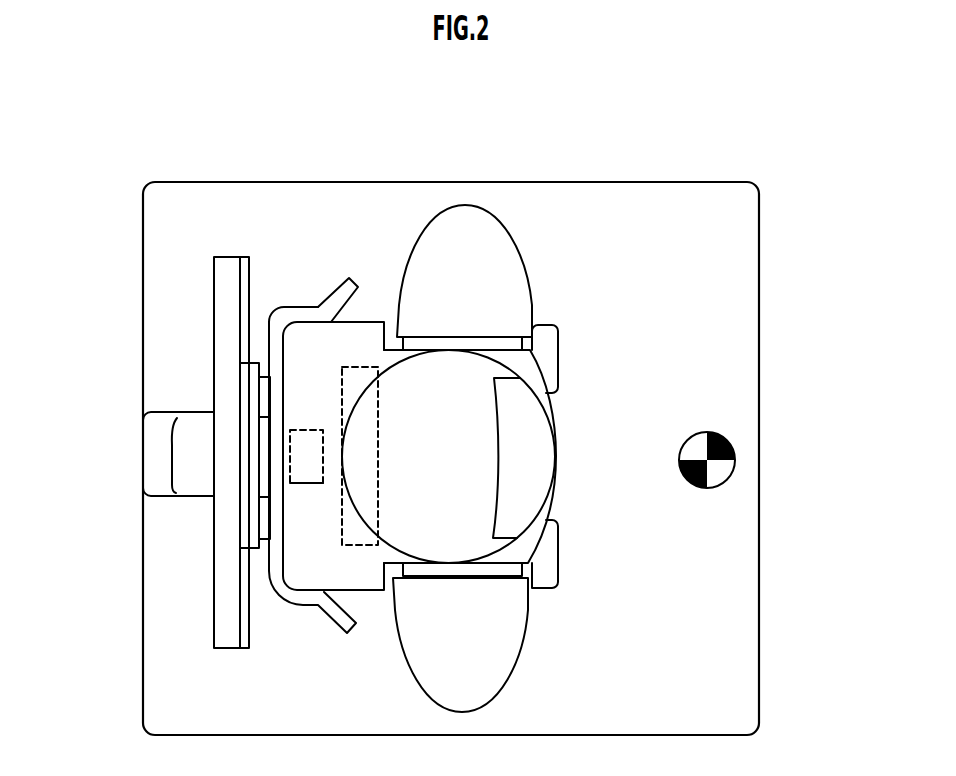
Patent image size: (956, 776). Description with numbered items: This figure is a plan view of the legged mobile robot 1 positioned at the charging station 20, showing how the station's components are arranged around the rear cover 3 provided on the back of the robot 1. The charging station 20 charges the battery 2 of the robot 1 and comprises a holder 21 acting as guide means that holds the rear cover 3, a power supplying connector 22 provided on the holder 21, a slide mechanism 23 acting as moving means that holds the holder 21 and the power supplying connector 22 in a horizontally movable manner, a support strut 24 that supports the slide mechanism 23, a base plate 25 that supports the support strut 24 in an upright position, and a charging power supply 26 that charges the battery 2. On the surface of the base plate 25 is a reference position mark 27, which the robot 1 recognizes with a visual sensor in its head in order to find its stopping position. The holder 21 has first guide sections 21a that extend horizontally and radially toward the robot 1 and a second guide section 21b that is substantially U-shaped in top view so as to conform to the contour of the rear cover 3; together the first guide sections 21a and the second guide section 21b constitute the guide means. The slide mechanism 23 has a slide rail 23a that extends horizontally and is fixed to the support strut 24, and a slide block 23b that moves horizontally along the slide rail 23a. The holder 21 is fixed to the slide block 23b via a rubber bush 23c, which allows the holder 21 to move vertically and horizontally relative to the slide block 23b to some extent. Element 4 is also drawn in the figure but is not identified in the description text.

The legged mobile robot 1 is at (486, 425).
The battery 2 is at (360, 366).
The rear cover 3 is at (384, 323).
The connector portion 4 is at (321, 430).
The charging station 20 is at (142, 394).
The holder 21 is at (290, 429).
The first guide sections 21a is at (346, 279).
The second guide section 21b is at (302, 303).
The power supplying connector 22 is at (302, 485).
The slide mechanism 23 is at (142, 394).
The slide rail 23a is at (240, 574).
The slide block 23b is at (247, 393).
The rubber bush 23c is at (267, 375).
The support strut 24 is at (193, 420).
The base plate 25 is at (737, 655).
The charging power supply 26 is at (152, 455).
The reference position mark 27 is at (727, 440).